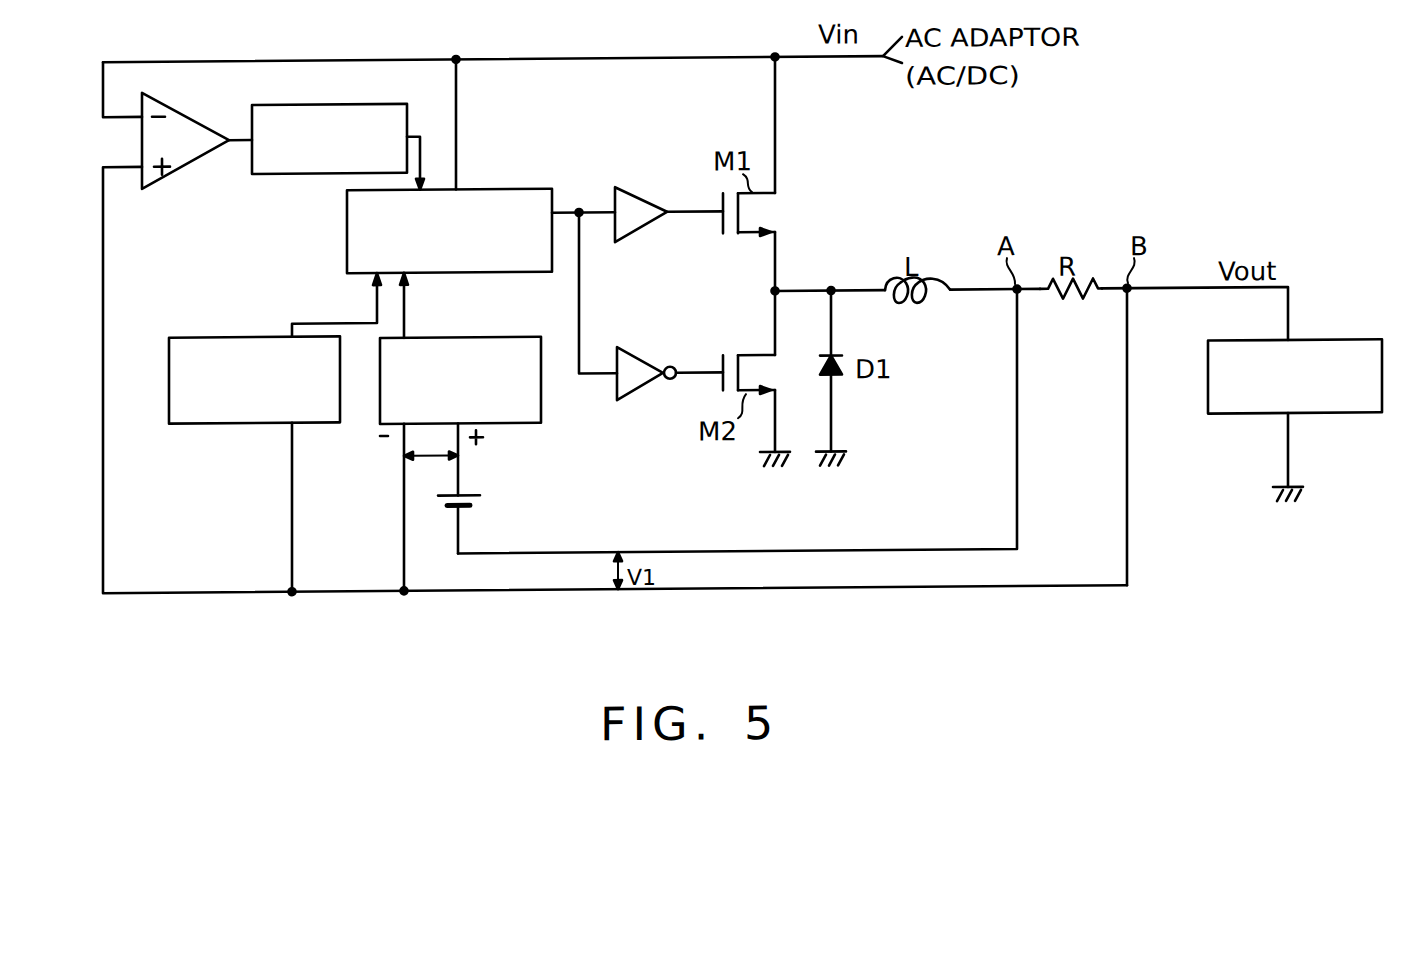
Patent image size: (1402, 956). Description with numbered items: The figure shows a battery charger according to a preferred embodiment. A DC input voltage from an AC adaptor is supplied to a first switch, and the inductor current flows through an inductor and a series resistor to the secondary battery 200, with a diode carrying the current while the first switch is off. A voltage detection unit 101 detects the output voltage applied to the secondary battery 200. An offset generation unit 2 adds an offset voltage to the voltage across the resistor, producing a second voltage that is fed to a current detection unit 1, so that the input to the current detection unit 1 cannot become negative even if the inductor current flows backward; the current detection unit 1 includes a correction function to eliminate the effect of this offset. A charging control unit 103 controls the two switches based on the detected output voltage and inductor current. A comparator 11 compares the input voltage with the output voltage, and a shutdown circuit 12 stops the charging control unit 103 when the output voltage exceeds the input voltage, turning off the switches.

The comparator 11 is at (214, 130).
The shutdown circuit 12 is at (284, 177).
The charging control unit 103 is at (483, 193).
The voltage detection unit 101 is at (246, 338).
The current detection unit 1 is at (470, 342).
The offset generation unit 2 is at (490, 495).
The secondary battery 200 is at (1326, 349).